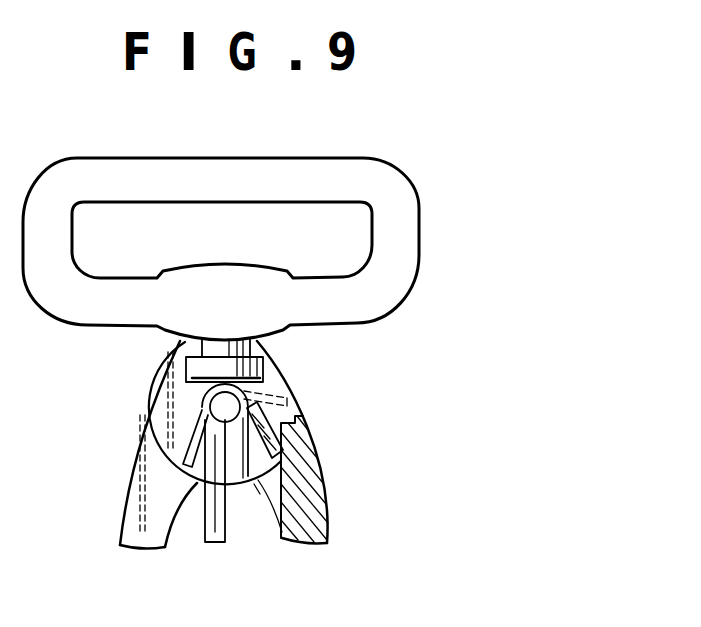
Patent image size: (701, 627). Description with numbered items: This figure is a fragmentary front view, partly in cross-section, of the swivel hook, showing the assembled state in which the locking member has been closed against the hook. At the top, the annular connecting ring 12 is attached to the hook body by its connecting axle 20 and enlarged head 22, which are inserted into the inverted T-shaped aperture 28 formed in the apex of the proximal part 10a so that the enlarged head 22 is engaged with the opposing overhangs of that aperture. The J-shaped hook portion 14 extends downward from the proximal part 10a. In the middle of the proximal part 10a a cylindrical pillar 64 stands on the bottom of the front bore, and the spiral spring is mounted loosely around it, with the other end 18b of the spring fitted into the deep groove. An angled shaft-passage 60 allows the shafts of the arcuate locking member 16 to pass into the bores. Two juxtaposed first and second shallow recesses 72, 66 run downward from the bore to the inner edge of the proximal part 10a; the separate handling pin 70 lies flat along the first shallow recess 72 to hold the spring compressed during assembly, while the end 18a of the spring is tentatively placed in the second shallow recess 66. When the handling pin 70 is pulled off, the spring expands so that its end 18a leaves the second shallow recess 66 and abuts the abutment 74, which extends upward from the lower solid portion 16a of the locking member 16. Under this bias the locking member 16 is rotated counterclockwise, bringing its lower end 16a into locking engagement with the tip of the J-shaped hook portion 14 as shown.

The connecting ring 12 is at (344, 157).
The proximal part 10a is at (280, 383).
The connecting axle 20 is at (180, 348).
The inverted T-shaped aperture 28 is at (258, 344).
The enlarged head 22 is at (186, 367).
The cylindrical pillar 64 is at (203, 408).
The shaft-passage 60 is at (287, 416).
The first shallow recess 72 is at (202, 484).
The end of the spiral spring 18a is at (240, 485).
The handling pin 70 is at (215, 545).
The other end of the spiral spring 18b is at (192, 449).
The abutment 74 is at (300, 446).
The J-shaped hook portion 14 is at (122, 529).
The arcuate locking member 16 is at (330, 526).
The lower solid portion 16a is at (300, 485).
The second shallow recess 66 is at (255, 486).